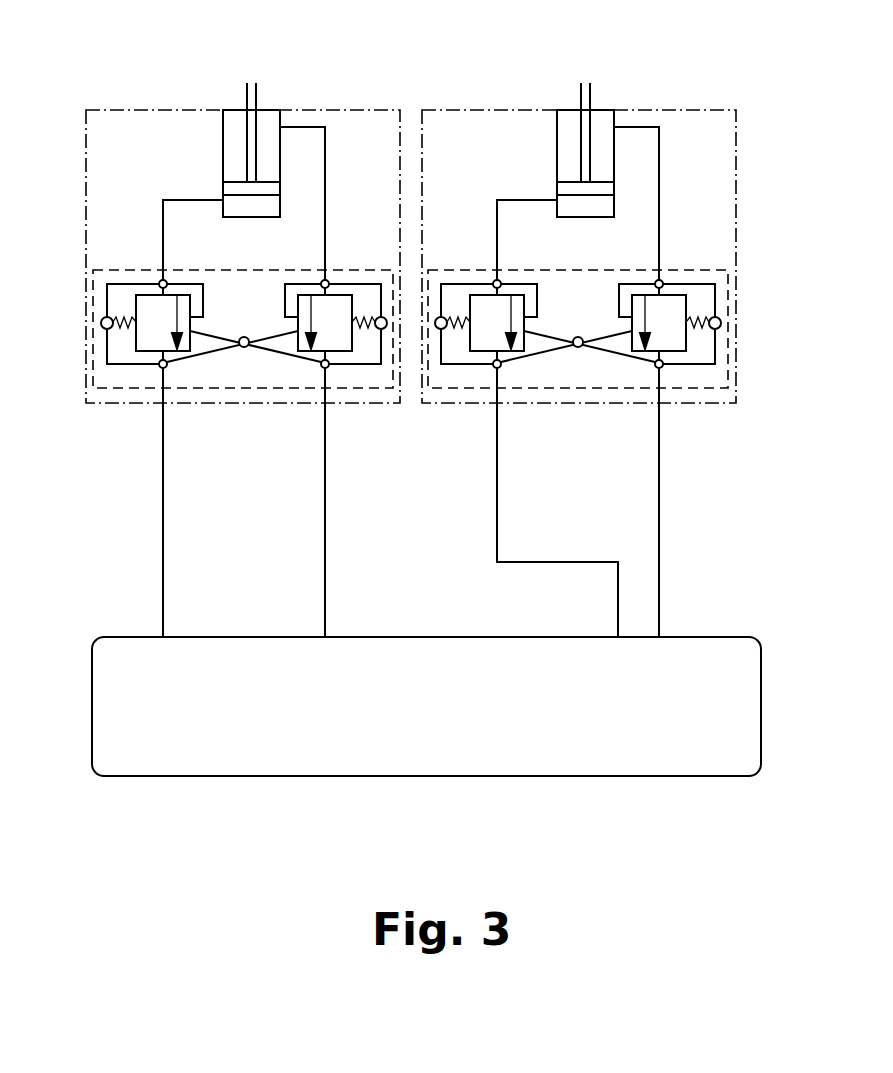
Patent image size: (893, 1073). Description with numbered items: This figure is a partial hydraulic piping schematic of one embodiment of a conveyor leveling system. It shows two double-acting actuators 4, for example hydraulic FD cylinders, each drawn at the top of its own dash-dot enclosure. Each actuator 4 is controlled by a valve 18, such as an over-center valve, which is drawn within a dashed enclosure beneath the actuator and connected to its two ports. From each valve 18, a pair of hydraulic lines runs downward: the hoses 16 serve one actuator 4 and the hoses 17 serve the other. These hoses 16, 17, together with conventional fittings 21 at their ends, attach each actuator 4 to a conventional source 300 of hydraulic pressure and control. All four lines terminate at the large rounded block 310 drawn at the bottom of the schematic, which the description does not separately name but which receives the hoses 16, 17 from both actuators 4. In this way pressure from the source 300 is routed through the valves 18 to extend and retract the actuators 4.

The source of hydraulic pressure and control 300 is at (127, 108).
The double-acting actuator 4 is at (273, 108).
The valve 18 is at (126, 264).
The fittings 21 is at (159, 408).
The hoses 16 is at (320, 505).
The hoses 17 is at (654, 507).
The control unit 310 is at (557, 776).